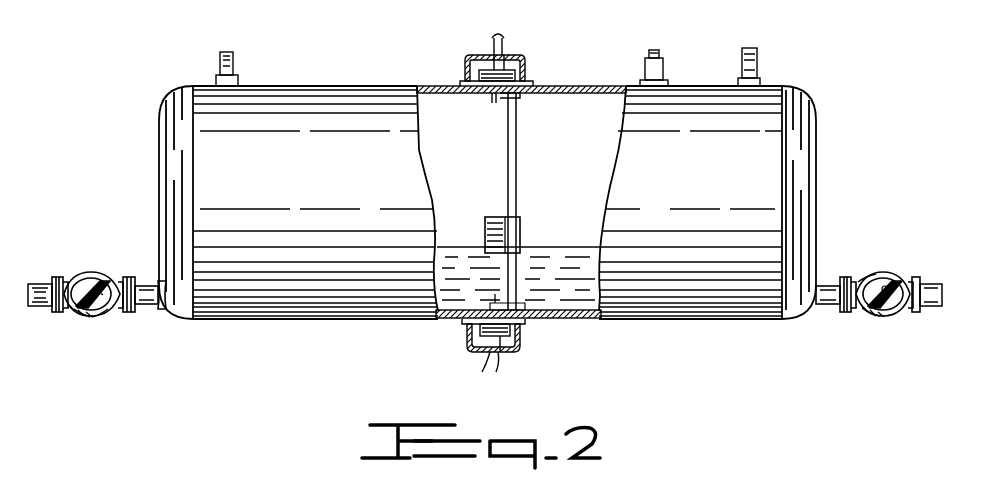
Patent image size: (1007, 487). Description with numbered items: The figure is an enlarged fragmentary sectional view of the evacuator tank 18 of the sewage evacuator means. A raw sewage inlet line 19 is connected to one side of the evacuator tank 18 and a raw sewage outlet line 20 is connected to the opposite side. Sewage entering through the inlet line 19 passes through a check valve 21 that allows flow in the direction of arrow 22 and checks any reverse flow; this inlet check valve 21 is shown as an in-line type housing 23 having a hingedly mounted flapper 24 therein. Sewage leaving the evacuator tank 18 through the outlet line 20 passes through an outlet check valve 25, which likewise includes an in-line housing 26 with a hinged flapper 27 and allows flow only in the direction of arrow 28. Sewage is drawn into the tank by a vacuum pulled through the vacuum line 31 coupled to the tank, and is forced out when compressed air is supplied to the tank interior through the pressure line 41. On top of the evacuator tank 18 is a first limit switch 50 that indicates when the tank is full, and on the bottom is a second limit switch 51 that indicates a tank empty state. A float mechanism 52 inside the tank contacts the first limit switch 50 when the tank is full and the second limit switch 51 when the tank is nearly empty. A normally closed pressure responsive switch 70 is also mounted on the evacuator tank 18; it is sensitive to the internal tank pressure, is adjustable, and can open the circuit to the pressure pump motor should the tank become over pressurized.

The evacuator tank 18 is at (667, 319).
The raw sewage inlet line 19 is at (932, 283).
The raw sewage outlet line 20 is at (46, 283).
The check valve 21 is at (865, 313).
The arrow 22 is at (927, 335).
The housing 23 is at (863, 280).
The flapper 24 is at (880, 274).
The outlet check valve 25 is at (86, 275).
The in-line housing 26 is at (100, 317).
The hinged flapper 27 is at (75, 313).
The arrow 28 is at (153, 250).
The vacuum line 31 is at (235, 66).
The pressure line 41 is at (757, 58).
The first limit switch 50 is at (526, 75).
The second limit switch 51 is at (520, 342).
The float mechanism 52 is at (521, 224).
The pressure responsive switch 70 is at (663, 62).